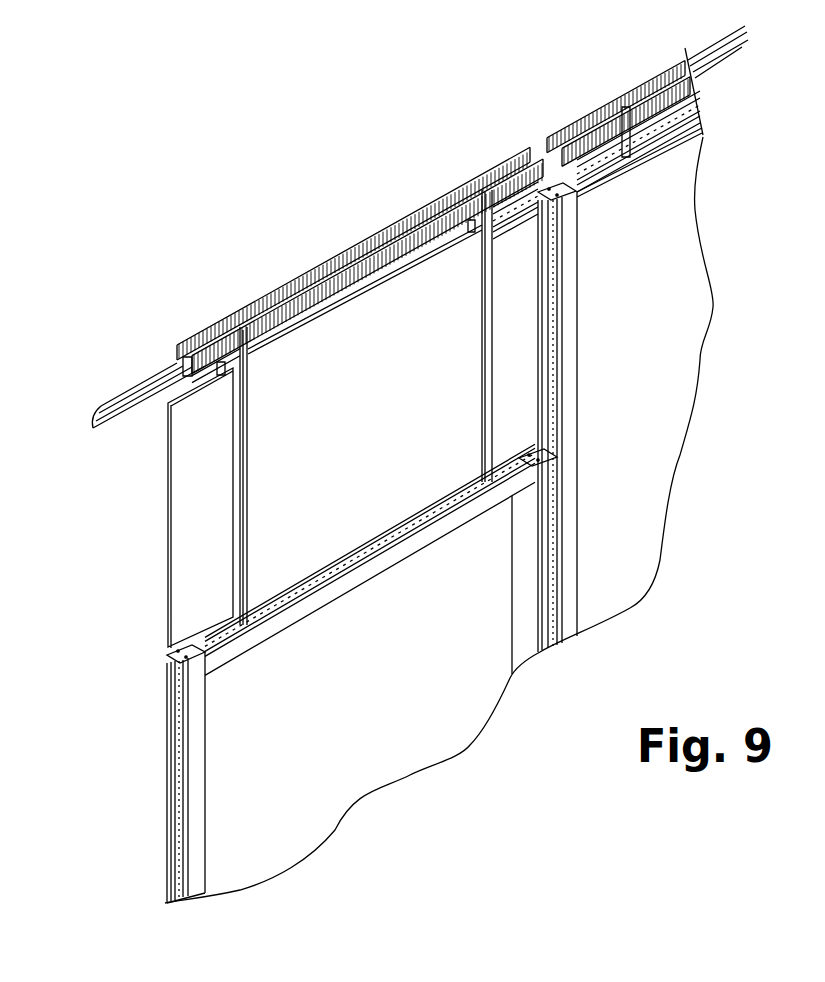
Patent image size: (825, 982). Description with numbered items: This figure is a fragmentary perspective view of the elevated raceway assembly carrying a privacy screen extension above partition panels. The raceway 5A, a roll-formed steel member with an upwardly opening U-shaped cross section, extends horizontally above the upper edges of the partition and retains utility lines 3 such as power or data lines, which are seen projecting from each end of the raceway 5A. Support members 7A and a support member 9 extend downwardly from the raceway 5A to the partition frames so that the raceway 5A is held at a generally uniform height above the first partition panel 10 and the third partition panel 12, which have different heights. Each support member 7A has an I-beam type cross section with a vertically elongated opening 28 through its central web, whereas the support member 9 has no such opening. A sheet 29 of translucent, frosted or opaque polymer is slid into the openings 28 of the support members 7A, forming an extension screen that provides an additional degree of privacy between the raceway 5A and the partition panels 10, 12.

The utility lines 3 is at (140, 381).
The raceway 5A is at (325, 258).
The support member 9 is at (653, 97).
The first support member 7A is at (495, 265).
The vertically elongated opening 28 is at (238, 447).
The sheet 29 is at (413, 424).
The third partition panel 12 is at (678, 274).
The first partition panel 10 is at (277, 737).